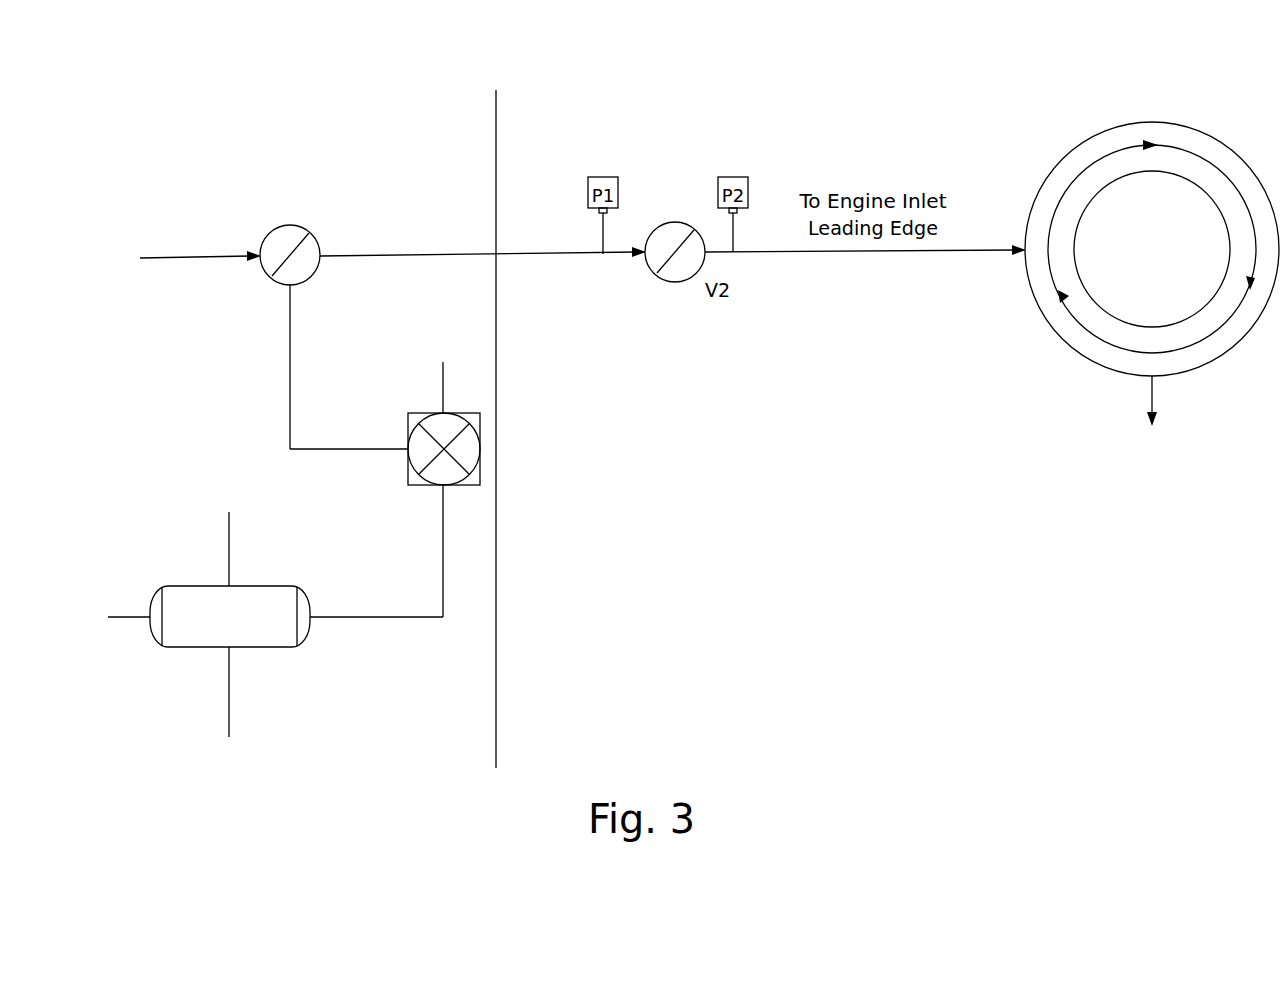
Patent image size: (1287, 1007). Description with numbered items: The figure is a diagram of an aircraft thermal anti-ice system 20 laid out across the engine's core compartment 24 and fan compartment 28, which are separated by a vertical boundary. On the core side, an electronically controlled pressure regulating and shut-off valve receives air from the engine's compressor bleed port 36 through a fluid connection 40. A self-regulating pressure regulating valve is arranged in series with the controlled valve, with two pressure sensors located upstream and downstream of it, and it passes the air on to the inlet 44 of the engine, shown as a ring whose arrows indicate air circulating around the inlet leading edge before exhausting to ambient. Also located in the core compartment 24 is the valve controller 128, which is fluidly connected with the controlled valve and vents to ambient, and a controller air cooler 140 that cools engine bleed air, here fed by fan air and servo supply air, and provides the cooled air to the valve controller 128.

The thermal anti-ice system 20 is at (994, 70).
The core compartment 24 is at (457, 151).
The fan compartment 28 is at (860, 158).
The compressor bleed port 36 is at (81, 214).
The fluid connection 40 is at (199, 256).
The inlet 44 is at (1152, 120).
The valve controller 128 is at (425, 487).
The controller air cooler 140 is at (257, 586).